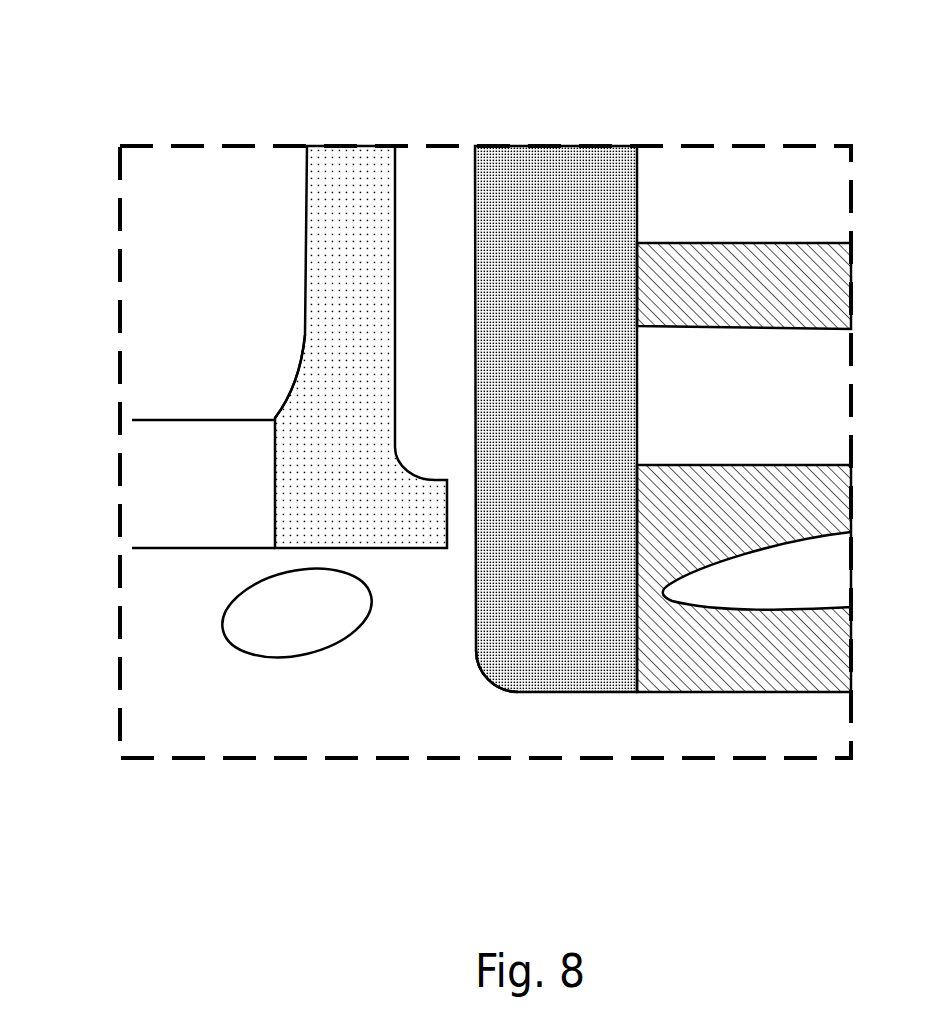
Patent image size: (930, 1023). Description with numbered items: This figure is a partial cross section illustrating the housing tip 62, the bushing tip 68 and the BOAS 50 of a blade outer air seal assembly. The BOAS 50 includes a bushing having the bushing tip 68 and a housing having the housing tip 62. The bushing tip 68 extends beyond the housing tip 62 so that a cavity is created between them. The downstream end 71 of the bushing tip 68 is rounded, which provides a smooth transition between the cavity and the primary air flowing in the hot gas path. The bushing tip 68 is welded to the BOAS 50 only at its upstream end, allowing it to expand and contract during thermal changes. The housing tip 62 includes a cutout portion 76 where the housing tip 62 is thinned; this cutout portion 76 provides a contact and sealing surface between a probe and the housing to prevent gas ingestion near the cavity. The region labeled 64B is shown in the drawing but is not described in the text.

The BOAS 50 is at (728, 696).
The housing tip 62 is at (320, 483).
The gap 64B is at (443, 208).
The bushing tip 68 is at (561, 632).
The downstream end 71 is at (490, 677).
The cutout portion 76 is at (286, 338).